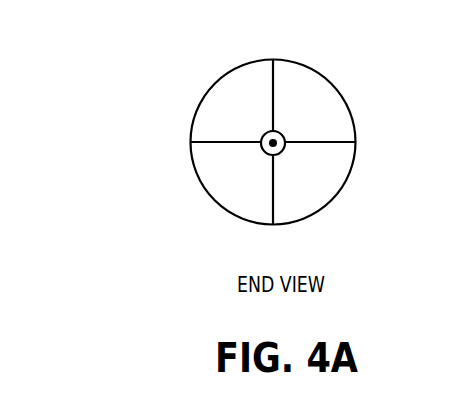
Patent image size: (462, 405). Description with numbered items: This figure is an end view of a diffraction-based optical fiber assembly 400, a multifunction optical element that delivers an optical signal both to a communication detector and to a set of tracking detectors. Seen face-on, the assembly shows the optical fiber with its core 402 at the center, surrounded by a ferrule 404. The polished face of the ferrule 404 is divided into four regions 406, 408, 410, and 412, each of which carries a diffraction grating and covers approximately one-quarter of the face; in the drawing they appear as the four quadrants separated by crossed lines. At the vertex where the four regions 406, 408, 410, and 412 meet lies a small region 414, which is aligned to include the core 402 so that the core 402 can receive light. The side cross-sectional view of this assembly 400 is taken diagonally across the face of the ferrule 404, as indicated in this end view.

The optical fiber assembly 400 is at (87, 76).
The core 402 is at (266, 150).
The ferrule 404 is at (309, 221).
The region 406 is at (218, 105).
The region 408 is at (322, 102).
The region 410 is at (323, 172).
The region 412 is at (223, 192).
The region 414 is at (287, 138).